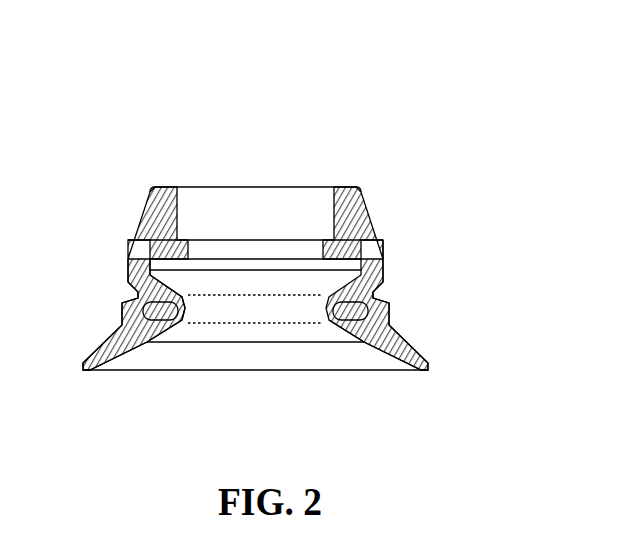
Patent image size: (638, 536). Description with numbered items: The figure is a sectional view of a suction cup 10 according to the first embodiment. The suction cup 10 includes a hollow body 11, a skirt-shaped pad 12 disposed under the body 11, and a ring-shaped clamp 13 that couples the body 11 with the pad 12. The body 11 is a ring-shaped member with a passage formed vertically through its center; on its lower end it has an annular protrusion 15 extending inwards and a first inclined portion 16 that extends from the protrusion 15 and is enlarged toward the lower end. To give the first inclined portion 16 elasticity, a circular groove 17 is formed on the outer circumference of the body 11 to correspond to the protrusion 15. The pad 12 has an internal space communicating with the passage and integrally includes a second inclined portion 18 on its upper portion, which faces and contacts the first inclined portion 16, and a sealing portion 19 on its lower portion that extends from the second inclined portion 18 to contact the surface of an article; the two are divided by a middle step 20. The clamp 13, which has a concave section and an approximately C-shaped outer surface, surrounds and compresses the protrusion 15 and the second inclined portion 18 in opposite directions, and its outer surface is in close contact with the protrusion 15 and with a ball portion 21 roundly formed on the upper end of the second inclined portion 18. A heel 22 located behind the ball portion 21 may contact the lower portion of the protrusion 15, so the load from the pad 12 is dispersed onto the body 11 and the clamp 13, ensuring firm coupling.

The suction cup 10 is at (325, 122).
The body 11 is at (382, 200).
The pad 12 is at (413, 340).
The clamp 13 is at (338, 343).
The protrusion 15 is at (180, 289).
The first inclined portion 16 is at (374, 326).
The groove 17 is at (385, 293).
The second inclined portion 18 is at (120, 314).
The sealing portion 19 is at (100, 356).
The step 20 is at (142, 344).
The ball portion 21 is at (176, 318).
The heel 22 is at (137, 293).